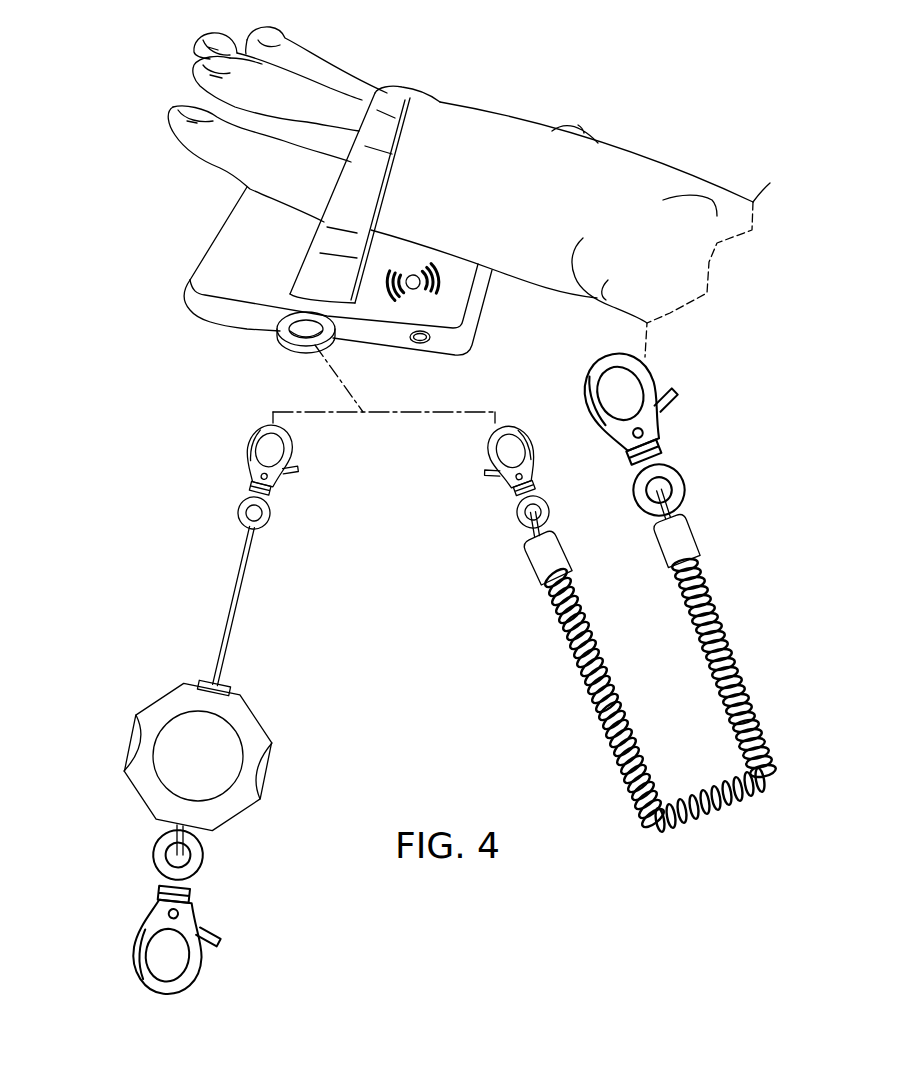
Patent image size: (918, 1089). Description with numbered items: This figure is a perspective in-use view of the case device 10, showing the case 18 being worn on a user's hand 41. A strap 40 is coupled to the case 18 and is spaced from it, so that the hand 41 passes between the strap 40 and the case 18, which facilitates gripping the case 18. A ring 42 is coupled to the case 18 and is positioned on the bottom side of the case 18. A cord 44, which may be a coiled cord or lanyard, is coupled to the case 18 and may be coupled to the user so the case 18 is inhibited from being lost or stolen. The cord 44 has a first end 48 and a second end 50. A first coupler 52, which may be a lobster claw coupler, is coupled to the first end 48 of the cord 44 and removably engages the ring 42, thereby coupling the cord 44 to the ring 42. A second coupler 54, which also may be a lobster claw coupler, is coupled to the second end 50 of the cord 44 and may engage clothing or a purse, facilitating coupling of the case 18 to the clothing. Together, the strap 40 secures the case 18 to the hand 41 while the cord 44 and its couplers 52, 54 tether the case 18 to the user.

The case device 10 is at (143, 188).
The case 18 is at (207, 257).
The strap 40 is at (397, 98).
The hand 41 is at (517, 118).
The ring 42 is at (293, 345).
The cord 44 is at (717, 630).
The first end 48 is at (683, 515).
The second end 50 is at (527, 538).
The first coupler 52 is at (503, 487).
The second coupler 54 is at (653, 420).